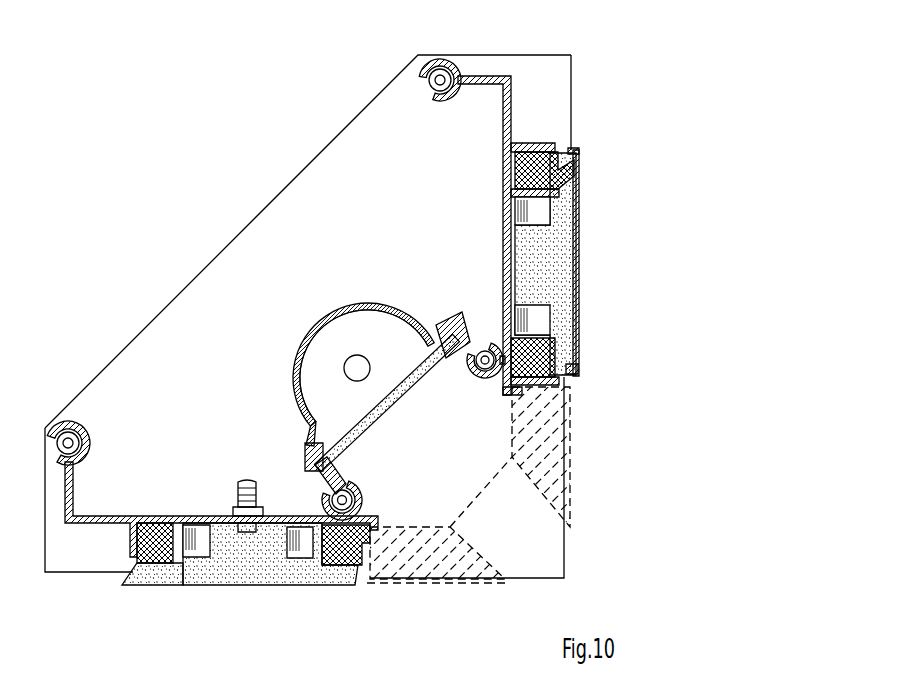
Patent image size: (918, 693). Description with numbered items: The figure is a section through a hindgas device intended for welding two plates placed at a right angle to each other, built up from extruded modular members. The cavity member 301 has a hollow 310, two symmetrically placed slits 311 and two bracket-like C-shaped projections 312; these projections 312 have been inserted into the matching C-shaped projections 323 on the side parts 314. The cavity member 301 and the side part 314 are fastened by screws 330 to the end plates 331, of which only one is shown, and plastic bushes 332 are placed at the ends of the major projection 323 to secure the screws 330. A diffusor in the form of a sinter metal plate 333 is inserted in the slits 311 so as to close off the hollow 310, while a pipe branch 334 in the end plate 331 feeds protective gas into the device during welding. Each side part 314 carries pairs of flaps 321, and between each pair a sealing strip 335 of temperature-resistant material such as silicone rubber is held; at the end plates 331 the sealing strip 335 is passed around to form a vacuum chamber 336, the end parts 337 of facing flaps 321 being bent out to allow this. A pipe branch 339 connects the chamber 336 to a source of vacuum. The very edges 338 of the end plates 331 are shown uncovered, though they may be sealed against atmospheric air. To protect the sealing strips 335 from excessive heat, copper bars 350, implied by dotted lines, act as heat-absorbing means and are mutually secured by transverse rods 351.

The cavity member 301 is at (378, 300).
The hollow 310 is at (318, 384).
The slits 311 is at (456, 335).
The C-shaped projections 312 is at (341, 478).
The side part 314 is at (504, 112).
The flaps 321 is at (133, 557).
The C-shaped projections 323 is at (361, 487).
The screws 330 is at (430, 76).
The end plates 331 is at (242, 327).
The bushes 332 is at (450, 57).
The sinter metal plate 333 is at (397, 393).
The pipe branch 334 is at (345, 363).
The sealing strip 335 is at (577, 193).
The vacuum chamber 336 is at (256, 569).
The end parts 337 is at (203, 550).
The edges 338 is at (565, 541).
The pipe branch 339 is at (243, 480).
The copper bars 350 is at (545, 440).
The transverse rods 351 is at (481, 489).